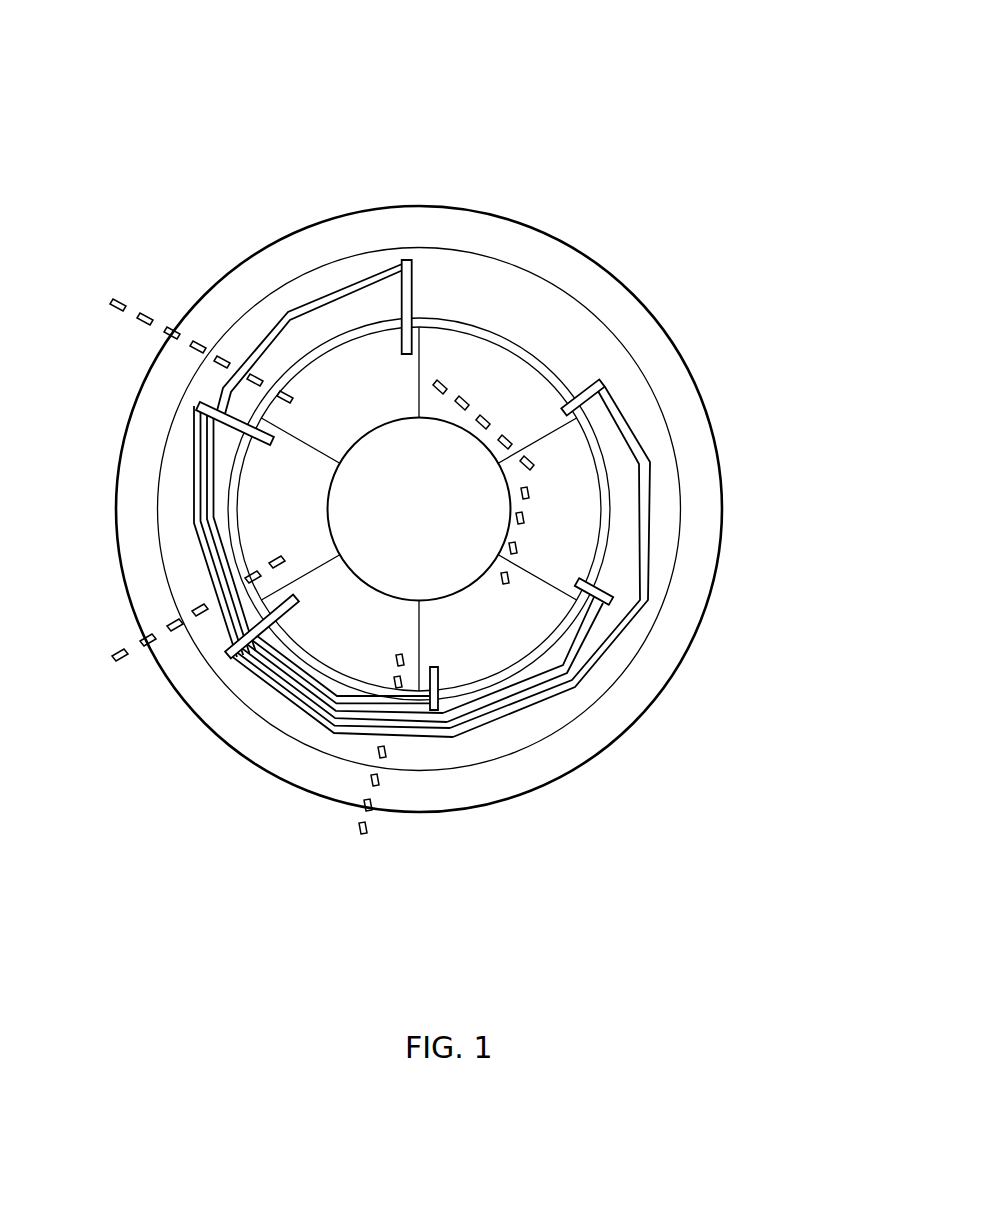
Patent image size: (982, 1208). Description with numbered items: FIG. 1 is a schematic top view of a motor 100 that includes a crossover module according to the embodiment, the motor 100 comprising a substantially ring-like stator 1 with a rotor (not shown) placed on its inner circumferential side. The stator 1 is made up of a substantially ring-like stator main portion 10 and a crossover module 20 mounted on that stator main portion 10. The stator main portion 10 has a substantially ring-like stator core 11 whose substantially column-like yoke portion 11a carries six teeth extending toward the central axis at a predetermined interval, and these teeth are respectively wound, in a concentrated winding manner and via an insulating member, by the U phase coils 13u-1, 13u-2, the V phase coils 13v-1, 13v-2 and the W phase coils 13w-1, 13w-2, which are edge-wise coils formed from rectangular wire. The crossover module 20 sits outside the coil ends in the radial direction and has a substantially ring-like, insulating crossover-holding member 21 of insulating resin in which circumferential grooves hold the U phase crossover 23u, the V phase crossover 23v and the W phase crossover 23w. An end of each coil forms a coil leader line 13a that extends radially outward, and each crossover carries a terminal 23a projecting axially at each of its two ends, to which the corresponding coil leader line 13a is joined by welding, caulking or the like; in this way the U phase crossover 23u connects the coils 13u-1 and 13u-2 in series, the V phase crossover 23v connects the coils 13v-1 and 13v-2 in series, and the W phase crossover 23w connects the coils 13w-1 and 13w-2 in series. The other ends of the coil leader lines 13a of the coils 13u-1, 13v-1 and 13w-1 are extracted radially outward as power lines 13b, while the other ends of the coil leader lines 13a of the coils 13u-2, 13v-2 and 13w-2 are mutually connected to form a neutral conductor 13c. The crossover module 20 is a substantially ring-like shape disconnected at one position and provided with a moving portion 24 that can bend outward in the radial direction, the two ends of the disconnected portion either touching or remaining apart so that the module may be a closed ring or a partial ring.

The motor 100 is at (349, 35).
The stator 1 is at (870, 488).
The stator main portion 10 is at (483, 510).
The stator core 11 is at (468, 430).
The yoke portion 11a is at (488, 581).
The crossover module 20 is at (456, 373).
The crossover-holding member 21 is at (735, 382).
The coil leader line 13a is at (431, 497).
The power line 13b is at (222, 569).
The neutral conductor 13c is at (617, 482).
The U phase crossover 23u is at (296, 301).
The V phase crossover 23v is at (141, 531).
The W phase crossover 23w is at (647, 562).
The terminal 23a is at (424, 526).
The moving portion 24 is at (386, 643).
The U phase coil 13u-1 is at (382, 382).
The U phase coil 13u-2 is at (537, 627).
The V phase coil 13v-1 is at (310, 515).
The V phase coil 13v-2 is at (598, 504).
The W phase coil 13w-1 is at (383, 627).
The W phase coil 13w-2 is at (523, 380).